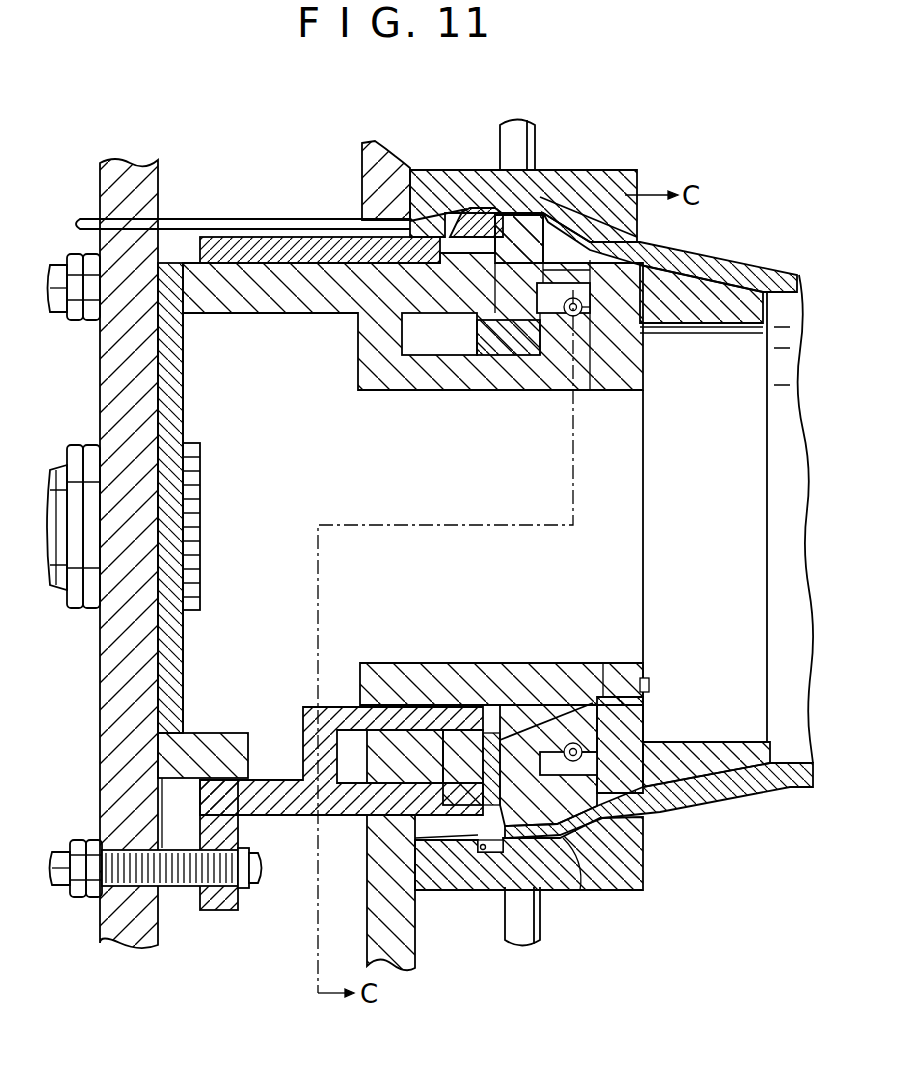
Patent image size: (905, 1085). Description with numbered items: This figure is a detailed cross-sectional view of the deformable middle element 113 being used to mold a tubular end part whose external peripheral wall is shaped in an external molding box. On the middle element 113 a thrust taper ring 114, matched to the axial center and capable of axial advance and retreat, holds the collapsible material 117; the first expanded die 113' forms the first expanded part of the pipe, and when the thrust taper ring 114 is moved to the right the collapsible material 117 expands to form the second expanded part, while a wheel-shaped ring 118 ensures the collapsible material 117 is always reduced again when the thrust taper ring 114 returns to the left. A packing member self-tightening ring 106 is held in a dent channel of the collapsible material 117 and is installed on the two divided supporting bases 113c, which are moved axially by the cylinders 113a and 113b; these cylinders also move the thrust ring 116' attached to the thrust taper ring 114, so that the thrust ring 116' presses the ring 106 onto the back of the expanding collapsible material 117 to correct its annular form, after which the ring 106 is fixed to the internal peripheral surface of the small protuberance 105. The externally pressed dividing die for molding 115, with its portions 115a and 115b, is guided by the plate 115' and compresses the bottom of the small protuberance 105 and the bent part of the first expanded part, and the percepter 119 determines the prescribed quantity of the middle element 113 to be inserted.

The small protuberance 105 is at (481, 213).
The packing member self-tightening ring 106 is at (450, 225).
The deformable middle element 113 is at (400, 504).
The cylinder 113a is at (58, 306).
The cylinder 113b is at (66, 898).
The supporting base 113c is at (506, 392).
The first expanded die 113' is at (726, 526).
The thrust taper ring 114 is at (477, 332).
The dividing die for molding 115 is at (539, 531).
The flange portion 115a is at (483, 853).
The flange portion 115b is at (580, 890).
The plate 115' is at (413, 910).
The thrust ring 116' is at (341, 781).
The collapsible material 117 is at (640, 819).
The wheel-shaped ring 118 is at (604, 323).
The percepter 119 is at (293, 213).